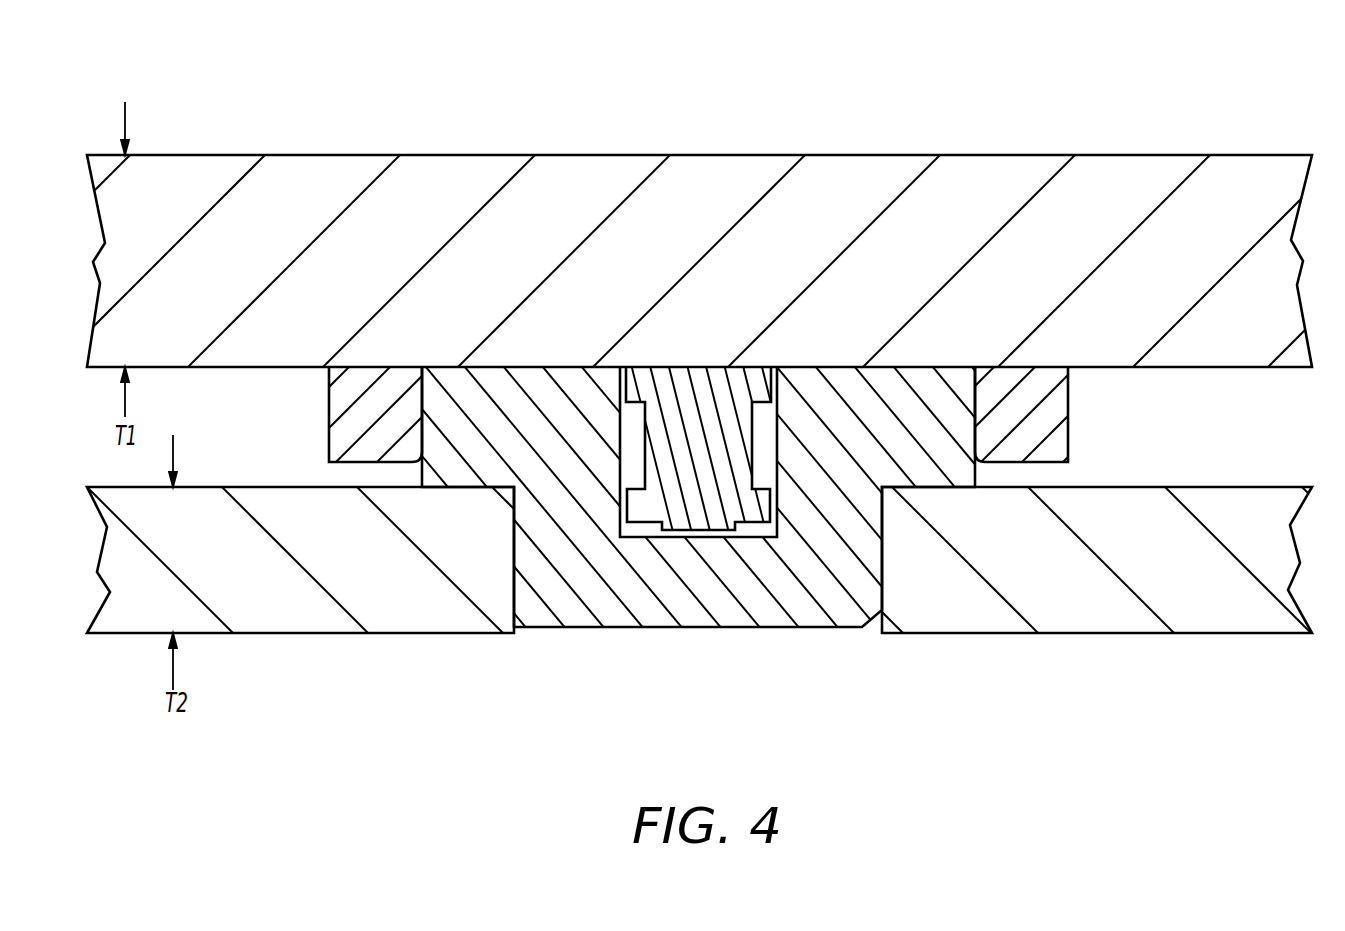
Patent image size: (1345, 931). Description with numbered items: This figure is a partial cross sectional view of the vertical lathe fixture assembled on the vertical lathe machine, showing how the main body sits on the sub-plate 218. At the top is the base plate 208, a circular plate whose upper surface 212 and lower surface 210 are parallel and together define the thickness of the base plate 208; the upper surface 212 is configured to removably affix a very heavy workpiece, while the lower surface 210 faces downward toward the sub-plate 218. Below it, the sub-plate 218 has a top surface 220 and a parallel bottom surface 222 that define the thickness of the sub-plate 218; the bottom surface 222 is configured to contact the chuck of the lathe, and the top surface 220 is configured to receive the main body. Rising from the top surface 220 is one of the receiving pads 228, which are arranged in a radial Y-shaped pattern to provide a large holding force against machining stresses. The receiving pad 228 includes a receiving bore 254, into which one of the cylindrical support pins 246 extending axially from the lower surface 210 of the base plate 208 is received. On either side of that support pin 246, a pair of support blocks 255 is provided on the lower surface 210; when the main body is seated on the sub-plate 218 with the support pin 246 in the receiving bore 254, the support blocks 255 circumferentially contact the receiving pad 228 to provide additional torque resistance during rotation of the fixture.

The base plate 208 is at (672, 199).
The upper surface 212 is at (672, 199).
The lower surface 210 is at (712, 426).
The top surface 220 is at (208, 427).
The support blocks 255 is at (357, 414).
The support pins 246 is at (637, 303).
The receiving bore 254 is at (751, 535).
The receiving pads 228 is at (752, 547).
The sub-plate 218 is at (1047, 605).
The bottom surface 222 is at (362, 634).